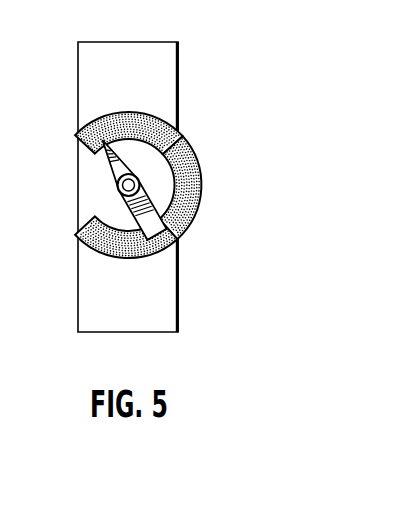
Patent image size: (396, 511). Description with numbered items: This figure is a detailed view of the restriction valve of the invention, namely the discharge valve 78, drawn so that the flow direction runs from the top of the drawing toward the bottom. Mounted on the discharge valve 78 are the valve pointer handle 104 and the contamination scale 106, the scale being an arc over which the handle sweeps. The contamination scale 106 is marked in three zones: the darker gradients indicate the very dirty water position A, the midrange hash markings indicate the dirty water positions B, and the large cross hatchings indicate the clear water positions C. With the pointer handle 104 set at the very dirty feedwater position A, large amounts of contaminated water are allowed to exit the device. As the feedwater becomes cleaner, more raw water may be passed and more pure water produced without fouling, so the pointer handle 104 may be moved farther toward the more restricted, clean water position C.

The discharge valve 78 is at (207, 60).
The valve pointer handle 104 is at (110, 171).
The contamination scale 106 is at (161, 202).
The very dirty water position A is at (161, 123).
The dirty water positions B is at (203, 184).
The clear water positions C is at (127, 253).